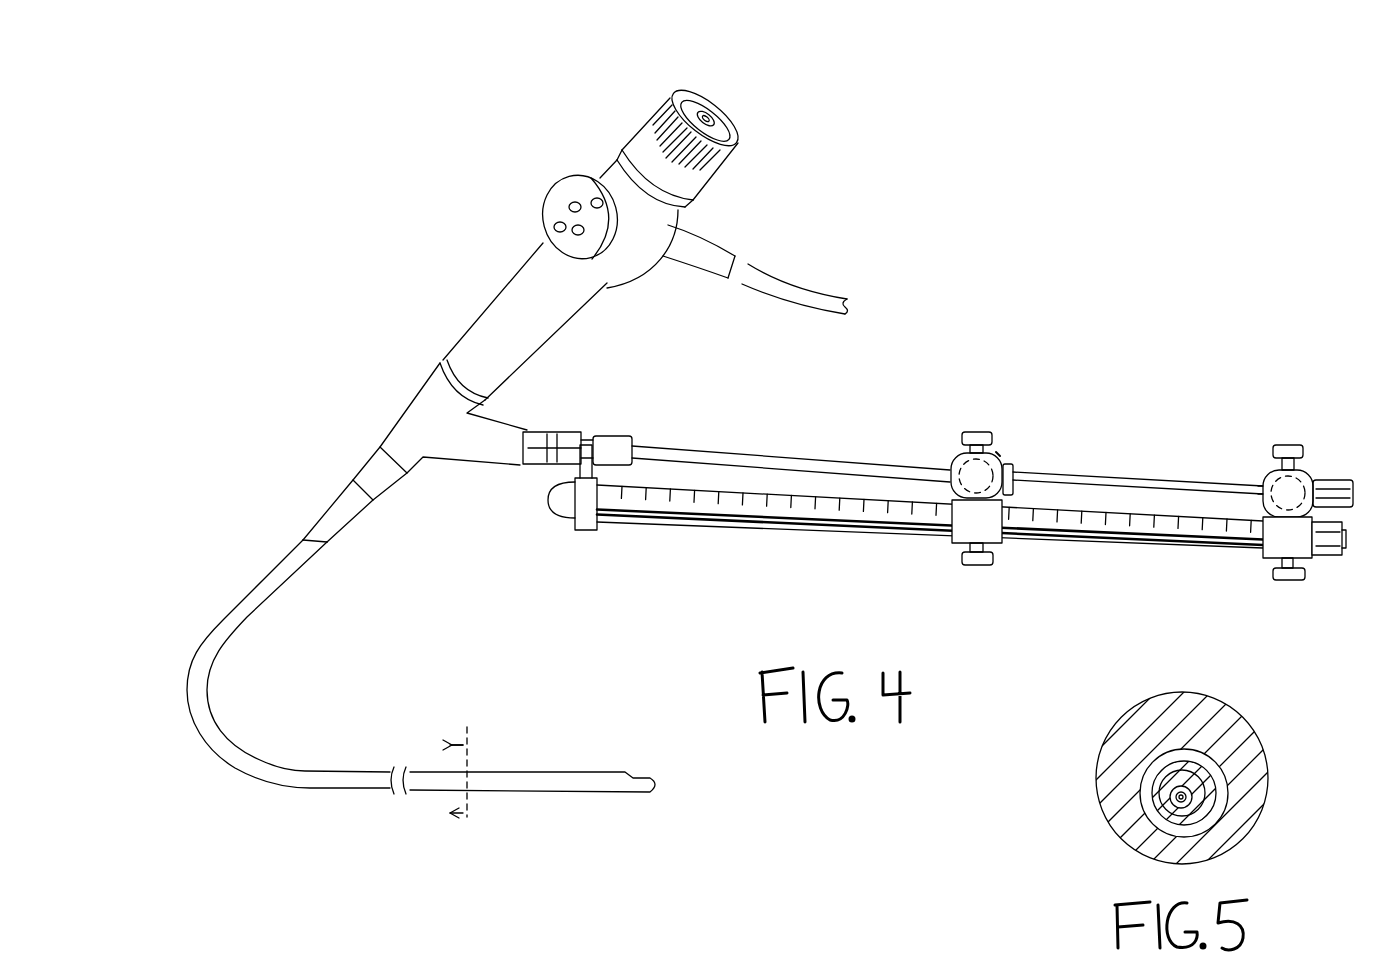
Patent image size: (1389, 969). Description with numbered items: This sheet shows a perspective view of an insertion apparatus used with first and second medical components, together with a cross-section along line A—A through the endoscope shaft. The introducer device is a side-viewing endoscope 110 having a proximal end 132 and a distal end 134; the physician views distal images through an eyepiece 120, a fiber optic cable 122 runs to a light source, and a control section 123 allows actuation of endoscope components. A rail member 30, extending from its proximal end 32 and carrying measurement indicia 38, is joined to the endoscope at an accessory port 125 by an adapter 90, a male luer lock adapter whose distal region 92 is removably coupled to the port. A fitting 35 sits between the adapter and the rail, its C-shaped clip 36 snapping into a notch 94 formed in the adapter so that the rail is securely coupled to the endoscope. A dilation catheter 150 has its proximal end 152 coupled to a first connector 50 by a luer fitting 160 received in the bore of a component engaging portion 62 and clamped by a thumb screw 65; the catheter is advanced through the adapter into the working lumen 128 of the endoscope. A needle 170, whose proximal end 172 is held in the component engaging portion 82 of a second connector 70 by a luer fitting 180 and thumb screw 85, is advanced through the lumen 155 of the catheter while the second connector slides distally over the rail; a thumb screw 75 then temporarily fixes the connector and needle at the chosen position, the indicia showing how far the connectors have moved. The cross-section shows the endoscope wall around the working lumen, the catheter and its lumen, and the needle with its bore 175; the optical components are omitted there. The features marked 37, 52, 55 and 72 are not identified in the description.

In FIG. 4, the endoscope 110 is at (455, 305).
In FIG. 5, the endoscope 110 is at (1213, 732).
In FIG. 4, the eyepiece 120 is at (722, 112).
In FIG. 4, the fiber optic cable 122 is at (795, 296).
In FIG. 4, the control section 123 is at (558, 212).
In FIG. 4, the accessory port 125 is at (505, 472).
In FIG. 4, the proximal end 132 is at (298, 535).
In FIG. 4, the distal end 134 is at (616, 766).
In FIG. 4, the adapter 90 is at (546, 452).
In FIG. 4, the distal region 92 is at (526, 455).
In FIG. 4, the notch 94 is at (589, 436).
In FIG. 4, the C-shaped clip 36 is at (603, 440).
In FIG. 4, the fitting 35 is at (587, 532).
In FIG. 4, the dilation catheter 150 is at (812, 452).
In FIG. 5, the dilation catheter 150 is at (1210, 800).
In FIG. 4, the rail member 30 is at (930, 553).
In FIG. 4, the graduated markings 37 is at (812, 526).
In FIG. 4, the measurement indicia 38 is at (1126, 527).
In FIG. 4, the first connector 50 is at (967, 495).
In FIG. 4, the proximal end 152 is at (945, 473).
In FIG. 4, the thumb screw 65 is at (975, 431).
In FIG. 4, the component engaging portion 62 is at (1001, 460).
In FIG. 4, the luer fitting 160 is at (1003, 456).
In FIG. 4, the stopcock block 52 is at (962, 528).
In FIG. 4, the lower handle 55 is at (980, 566).
In FIG. 4, the needle 170 is at (1162, 478).
In FIG. 5, the needle 170 is at (1177, 793).
In FIG. 4, the second connector 70 is at (1273, 492).
In FIG. 4, the luer fitting 180 is at (1267, 471).
In FIG. 4, the proximal end 172 is at (1258, 488).
In FIG. 4, the thumb screw 85 is at (1288, 446).
In FIG. 4, the component engaging portion 82 is at (1305, 468).
In FIG. 4, the stopcock block 72 is at (1277, 548).
In FIG. 4, the proximal end 32 is at (1330, 566).
In FIG. 4, the thumb screw 75 is at (1288, 582).
In FIG. 5, the working lumen 128 is at (1215, 780).
In FIG. 5, the lumen 155 is at (1195, 805).
In FIG. 5, the bore 175 is at (1180, 800).